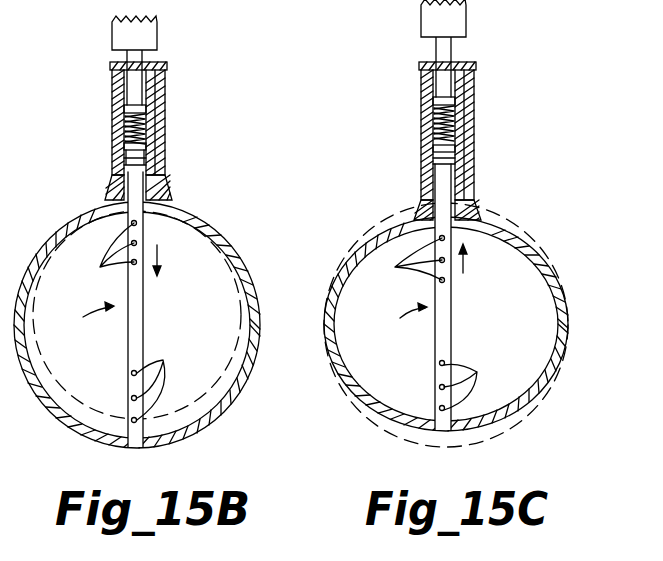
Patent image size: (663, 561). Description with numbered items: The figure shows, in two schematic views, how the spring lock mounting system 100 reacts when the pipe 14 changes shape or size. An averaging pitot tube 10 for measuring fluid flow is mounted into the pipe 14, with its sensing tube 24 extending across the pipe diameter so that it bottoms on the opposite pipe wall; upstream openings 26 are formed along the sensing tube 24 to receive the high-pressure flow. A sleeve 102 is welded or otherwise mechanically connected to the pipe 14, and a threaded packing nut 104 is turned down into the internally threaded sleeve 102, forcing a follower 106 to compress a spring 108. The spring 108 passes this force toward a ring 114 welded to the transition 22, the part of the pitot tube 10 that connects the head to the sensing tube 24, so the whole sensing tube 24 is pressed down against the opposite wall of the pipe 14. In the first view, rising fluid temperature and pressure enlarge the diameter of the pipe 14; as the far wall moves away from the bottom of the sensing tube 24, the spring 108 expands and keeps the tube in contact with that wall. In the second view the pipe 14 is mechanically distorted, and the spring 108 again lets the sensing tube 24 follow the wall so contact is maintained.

In FIG. 15B, the averaging pitot tube 10 is at (83, 330).
In FIG. 15C, the averaging pitot tube 10 is at (402, 331).
In FIG. 15B, the pipe 14 is at (233, 243).
In FIG. 15C, the pipe 14 is at (520, 228).
In FIG. 15B, the transition 22 is at (137, 67).
In FIG. 15C, the transition 22 is at (443, 55).
In FIG. 15B, the sensing tube 24 is at (136, 338).
In FIG. 15C, the sensing tube 24 is at (444, 318).
In FIG. 15B, the upstream openings 26 is at (134, 321).
In FIG. 15C, the upstream openings 26 is at (432, 324).
In FIG. 15B, the mounting system 100 is at (139, 108).
In FIG. 15C, the mounting system 100 is at (443, 110).
In FIG. 15B, the sleeve 102 is at (115, 147).
In FIG. 15C, the sleeve 102 is at (420, 153).
In FIG. 15B, the threaded packing nut 104 is at (110, 65).
In FIG. 15C, the threaded packing nut 104 is at (415, 68).
In FIG. 15B, the follower 106 is at (128, 109).
In FIG. 15C, the follower 106 is at (430, 103).
In FIG. 15B, the spring 108 is at (157, 115).
In FIG. 15C, the spring 108 is at (467, 115).
In FIG. 15B, the ring 114 is at (140, 170).
In FIG. 15C, the ring 114 is at (463, 170).